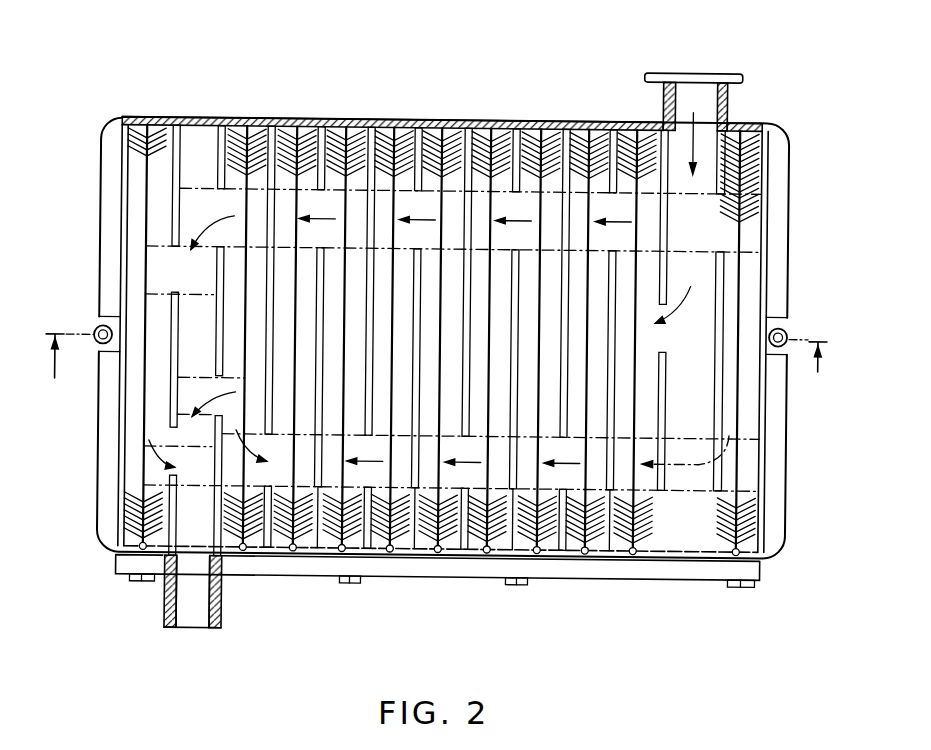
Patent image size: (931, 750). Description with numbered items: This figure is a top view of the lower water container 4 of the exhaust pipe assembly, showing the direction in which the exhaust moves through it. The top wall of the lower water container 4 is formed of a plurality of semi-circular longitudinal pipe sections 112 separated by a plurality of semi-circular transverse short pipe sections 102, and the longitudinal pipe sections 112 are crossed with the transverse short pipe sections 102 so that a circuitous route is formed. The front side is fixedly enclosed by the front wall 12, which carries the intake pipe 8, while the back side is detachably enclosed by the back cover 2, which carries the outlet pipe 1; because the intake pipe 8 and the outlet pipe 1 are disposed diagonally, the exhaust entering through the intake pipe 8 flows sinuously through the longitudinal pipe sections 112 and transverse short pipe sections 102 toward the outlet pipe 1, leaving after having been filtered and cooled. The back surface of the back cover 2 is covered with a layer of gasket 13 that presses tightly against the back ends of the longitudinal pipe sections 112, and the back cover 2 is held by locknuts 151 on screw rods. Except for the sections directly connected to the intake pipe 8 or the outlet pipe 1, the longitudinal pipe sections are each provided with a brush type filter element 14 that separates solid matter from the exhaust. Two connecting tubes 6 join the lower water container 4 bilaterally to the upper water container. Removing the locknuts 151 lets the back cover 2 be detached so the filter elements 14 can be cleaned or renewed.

The outlet pipe 1 is at (170, 600).
The back cover 2 is at (235, 562).
The lower water container 4 is at (775, 186).
The connecting tubes 6 is at (790, 327).
The intake pipe 8 is at (654, 71).
The front wall 12 is at (443, 120).
The gasket 13 is at (600, 558).
The brush type filter elements 14 is at (743, 130).
The semi-circular transverse short pipe sections 102 is at (707, 450).
The semi-circular longitudinal pipe sections 112 is at (693, 549).
The locknuts 151 is at (351, 583).